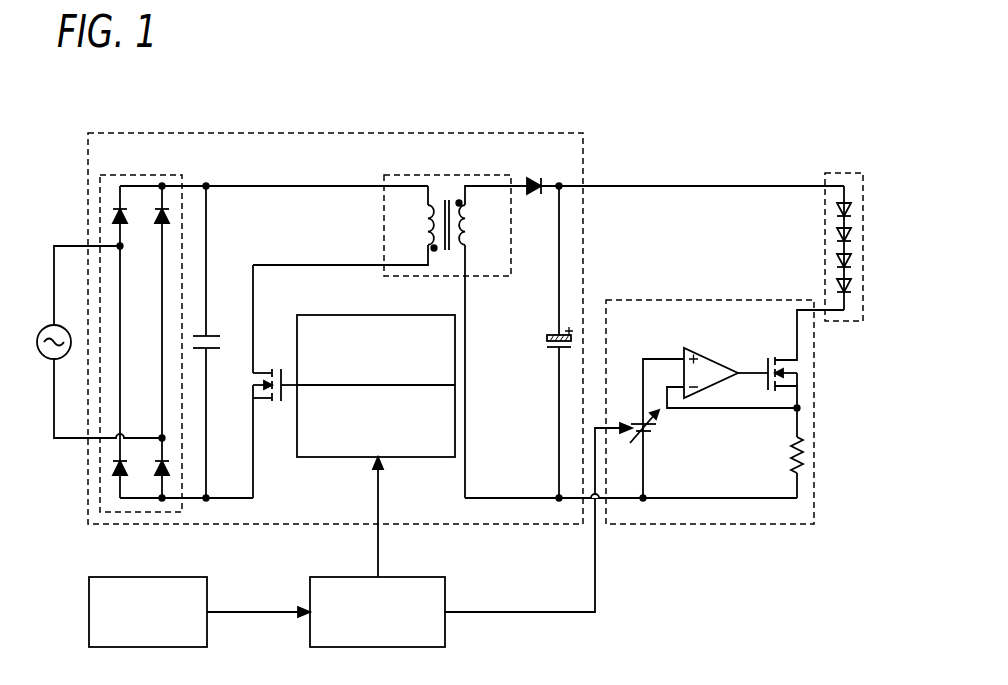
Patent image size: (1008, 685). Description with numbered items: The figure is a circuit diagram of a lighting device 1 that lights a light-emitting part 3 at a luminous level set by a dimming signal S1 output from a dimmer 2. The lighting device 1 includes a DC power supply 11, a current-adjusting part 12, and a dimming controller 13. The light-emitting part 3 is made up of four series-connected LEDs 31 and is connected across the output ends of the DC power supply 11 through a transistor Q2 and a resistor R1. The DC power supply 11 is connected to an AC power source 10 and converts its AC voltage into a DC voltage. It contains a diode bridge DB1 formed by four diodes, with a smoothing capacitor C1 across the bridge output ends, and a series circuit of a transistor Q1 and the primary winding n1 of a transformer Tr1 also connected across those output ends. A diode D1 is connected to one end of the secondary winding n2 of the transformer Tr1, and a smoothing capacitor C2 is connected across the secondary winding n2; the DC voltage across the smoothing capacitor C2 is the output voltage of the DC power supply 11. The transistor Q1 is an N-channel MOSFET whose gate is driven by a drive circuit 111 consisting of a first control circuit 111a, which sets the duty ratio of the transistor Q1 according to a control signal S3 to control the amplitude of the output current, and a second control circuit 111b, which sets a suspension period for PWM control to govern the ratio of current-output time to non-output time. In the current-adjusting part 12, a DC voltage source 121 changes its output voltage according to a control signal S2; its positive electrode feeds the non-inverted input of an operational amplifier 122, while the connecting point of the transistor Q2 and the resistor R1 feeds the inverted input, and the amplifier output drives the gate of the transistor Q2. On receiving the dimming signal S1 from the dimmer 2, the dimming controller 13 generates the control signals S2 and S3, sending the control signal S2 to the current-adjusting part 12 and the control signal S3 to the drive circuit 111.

The lighting device 1 is at (613, 130).
The dimmer 2 is at (137, 577).
The light-emitting part 3 is at (847, 171).
The AC power source 10 is at (43, 328).
The DC power supply 11 is at (152, 133).
The current-adjusting part 12 is at (675, 300).
The dimming controller 13 is at (334, 577).
The LED 31 is at (852, 209).
The drive circuit 111 is at (310, 458).
The first control circuit 111a is at (327, 316).
The second control circuit 111b is at (409, 458).
The DC voltage source 121 is at (655, 432).
The operational amplifier 122 is at (702, 350).
The diode bridge DB1 is at (184, 174).
The transformer Tr1 is at (384, 217).
The primary winding n1 is at (321, 225).
The secondary winding n2 is at (626, 342).
The diode D1 is at (541, 168).
The smoothing capacitor C1 is at (216, 342).
The smoothing capacitor C2 is at (542, 343).
The transistor Q1 is at (258, 381).
The transistor Q2 is at (801, 360).
The resistor R1 is at (777, 453).
The dimming signal S1 is at (258, 595).
The control signal S2 is at (538, 517).
The control signal S3 is at (394, 517).